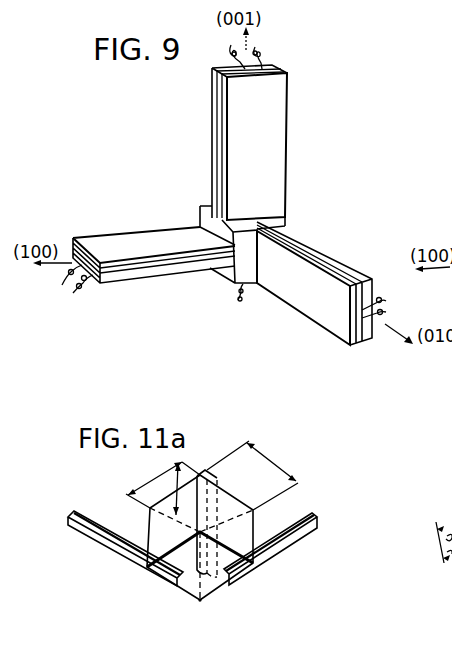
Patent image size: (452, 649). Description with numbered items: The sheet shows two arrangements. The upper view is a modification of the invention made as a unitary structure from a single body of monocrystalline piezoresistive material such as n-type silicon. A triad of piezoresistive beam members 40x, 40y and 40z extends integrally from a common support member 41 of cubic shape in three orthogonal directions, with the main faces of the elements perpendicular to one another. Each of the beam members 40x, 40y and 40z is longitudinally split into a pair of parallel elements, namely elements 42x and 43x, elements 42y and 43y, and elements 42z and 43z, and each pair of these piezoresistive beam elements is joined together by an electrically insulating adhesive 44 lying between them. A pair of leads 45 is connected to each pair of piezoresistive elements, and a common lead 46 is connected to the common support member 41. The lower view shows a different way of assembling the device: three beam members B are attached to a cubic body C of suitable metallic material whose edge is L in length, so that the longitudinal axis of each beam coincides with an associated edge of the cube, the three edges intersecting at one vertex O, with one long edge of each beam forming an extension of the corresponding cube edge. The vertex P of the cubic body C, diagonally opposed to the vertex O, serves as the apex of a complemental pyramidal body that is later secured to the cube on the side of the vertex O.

In FIG. 9, the piezoresistive beam member 40x is at (103, 226).
In FIG. 9, the piezoresistive beam member 40y is at (324, 364).
In FIG. 9, the piezoresistive beam member 40z is at (330, 117).
In FIG. 9, the common support member 41 is at (208, 270).
In FIG. 9, the piezoresistive beam element 42x is at (148, 231).
In FIG. 9, the piezoresistive beam element 42y is at (288, 299).
In FIG. 9, the piezoresistive beam element 42z is at (284, 131).
In FIG. 9, the piezoresistive beam element 43x is at (162, 267).
In FIG. 9, the piezoresistive beam element 43y is at (340, 267).
In FIG. 9, the piezoresistive beam element 43z is at (212, 113).
In FIG. 9, the electrically insulating adhesive 44 is at (218, 146).
In FIG. 9, the leads 45 is at (55, 287).
In FIG. 9, the common lead 46 is at (238, 296).
In FIG. 11A, the vertex of the cubic body P is at (202, 472).
In FIG. 11A, the beam members B is at (102, 517).
In FIG. 11A, the cubic body C is at (183, 592).
In FIG. 11A, the vertex of the cubic body O is at (201, 610).
In FIG. 11A, the edge length of the cubic body L is at (212, 478).